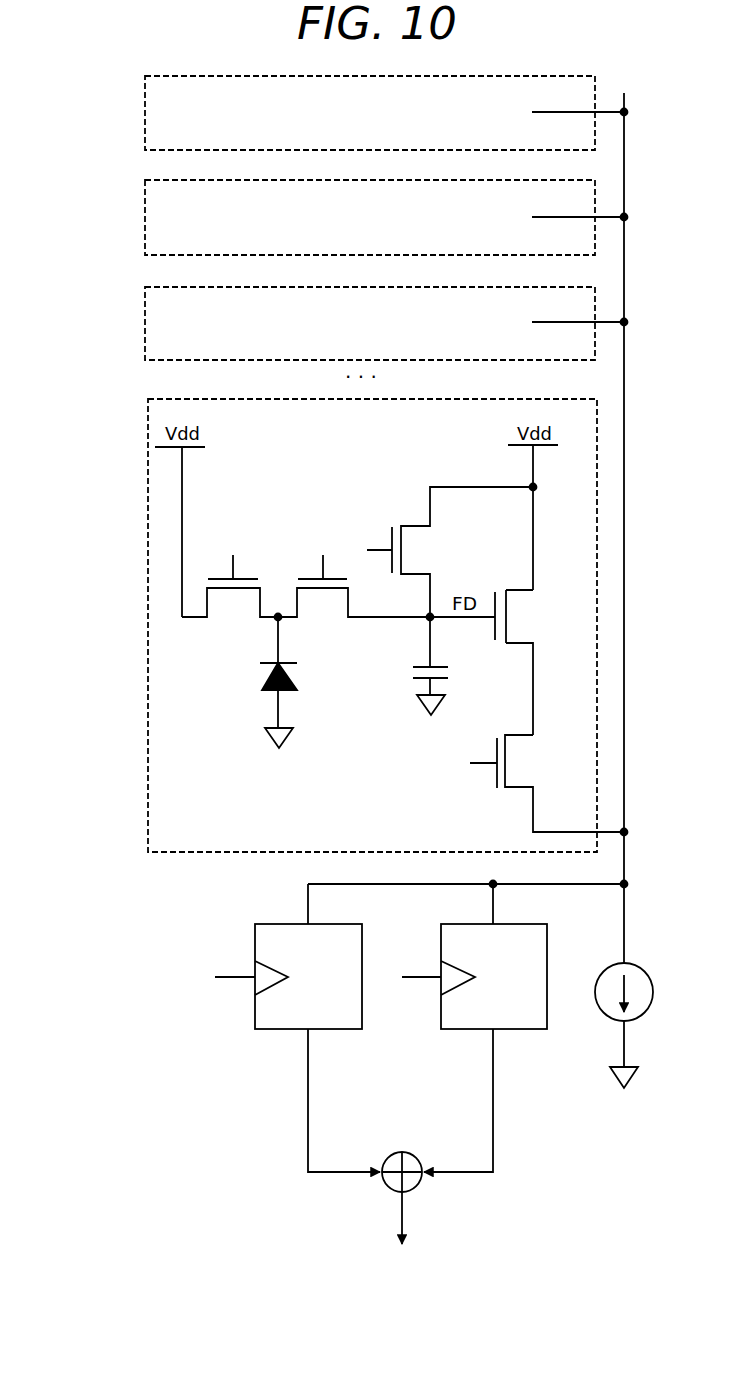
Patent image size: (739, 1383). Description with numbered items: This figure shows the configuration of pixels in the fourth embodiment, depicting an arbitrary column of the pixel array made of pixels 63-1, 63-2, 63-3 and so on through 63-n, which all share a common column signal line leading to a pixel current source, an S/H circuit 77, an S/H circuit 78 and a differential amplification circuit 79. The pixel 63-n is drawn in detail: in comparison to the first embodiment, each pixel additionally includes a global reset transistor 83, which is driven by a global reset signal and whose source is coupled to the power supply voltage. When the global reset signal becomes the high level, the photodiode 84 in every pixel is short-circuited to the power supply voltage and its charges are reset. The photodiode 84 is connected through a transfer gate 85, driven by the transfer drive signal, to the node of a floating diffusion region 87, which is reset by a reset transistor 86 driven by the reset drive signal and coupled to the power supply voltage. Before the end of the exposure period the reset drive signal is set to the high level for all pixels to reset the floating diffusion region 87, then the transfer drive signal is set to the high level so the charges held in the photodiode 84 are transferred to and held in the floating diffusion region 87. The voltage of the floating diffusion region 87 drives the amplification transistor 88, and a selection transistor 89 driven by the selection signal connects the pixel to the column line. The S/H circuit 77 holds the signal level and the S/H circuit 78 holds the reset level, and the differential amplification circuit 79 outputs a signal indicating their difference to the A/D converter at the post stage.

The pixel 63-1 is at (151, 113).
The pixel 63-2 is at (151, 218).
The pixel 63-3 is at (151, 323).
The pixel 63-n is at (152, 592).
The global reset transistor 83 is at (218, 610).
The photodiode 84 is at (290, 695).
The transfer gate 85 is at (337, 605).
The reset transistor 86 is at (423, 537).
The floating diffusion region 87 is at (448, 629).
The amplification transistor 88 is at (525, 603).
The selection transistor 89 is at (525, 748).
The S/H circuit 77 is at (517, 1032).
The S/H circuit 78 is at (278, 1032).
The differential amplification circuit 79 is at (417, 1188).